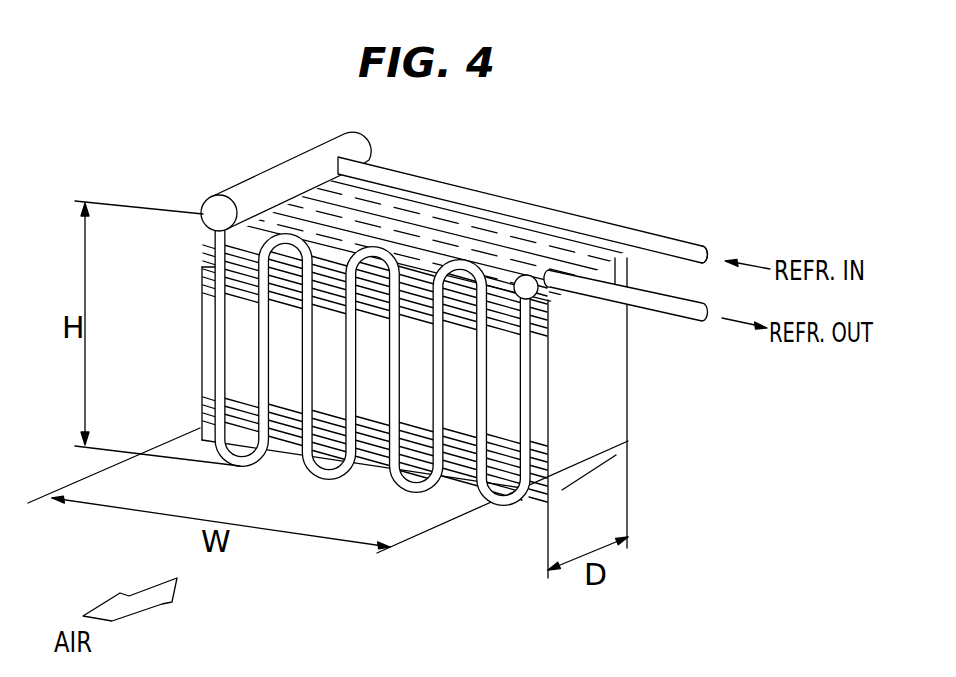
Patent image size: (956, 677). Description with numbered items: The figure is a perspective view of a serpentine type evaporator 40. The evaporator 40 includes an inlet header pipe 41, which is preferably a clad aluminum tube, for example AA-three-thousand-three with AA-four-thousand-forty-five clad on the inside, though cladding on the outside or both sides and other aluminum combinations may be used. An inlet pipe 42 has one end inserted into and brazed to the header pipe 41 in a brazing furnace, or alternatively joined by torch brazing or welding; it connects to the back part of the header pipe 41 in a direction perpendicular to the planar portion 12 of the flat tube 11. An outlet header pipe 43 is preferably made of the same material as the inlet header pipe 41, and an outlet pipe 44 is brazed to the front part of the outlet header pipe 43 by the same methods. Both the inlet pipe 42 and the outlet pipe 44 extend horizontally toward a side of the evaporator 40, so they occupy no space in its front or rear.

The flat tube 11 is at (393, 211).
The planar portion 12 is at (218, 340).
The evaporator 40 is at (368, 482).
The inlet header pipe 41 is at (288, 178).
The inlet pipe 42 is at (496, 200).
The outlet header pipe 43 is at (639, 249).
The outlet pipe 44 is at (667, 312).